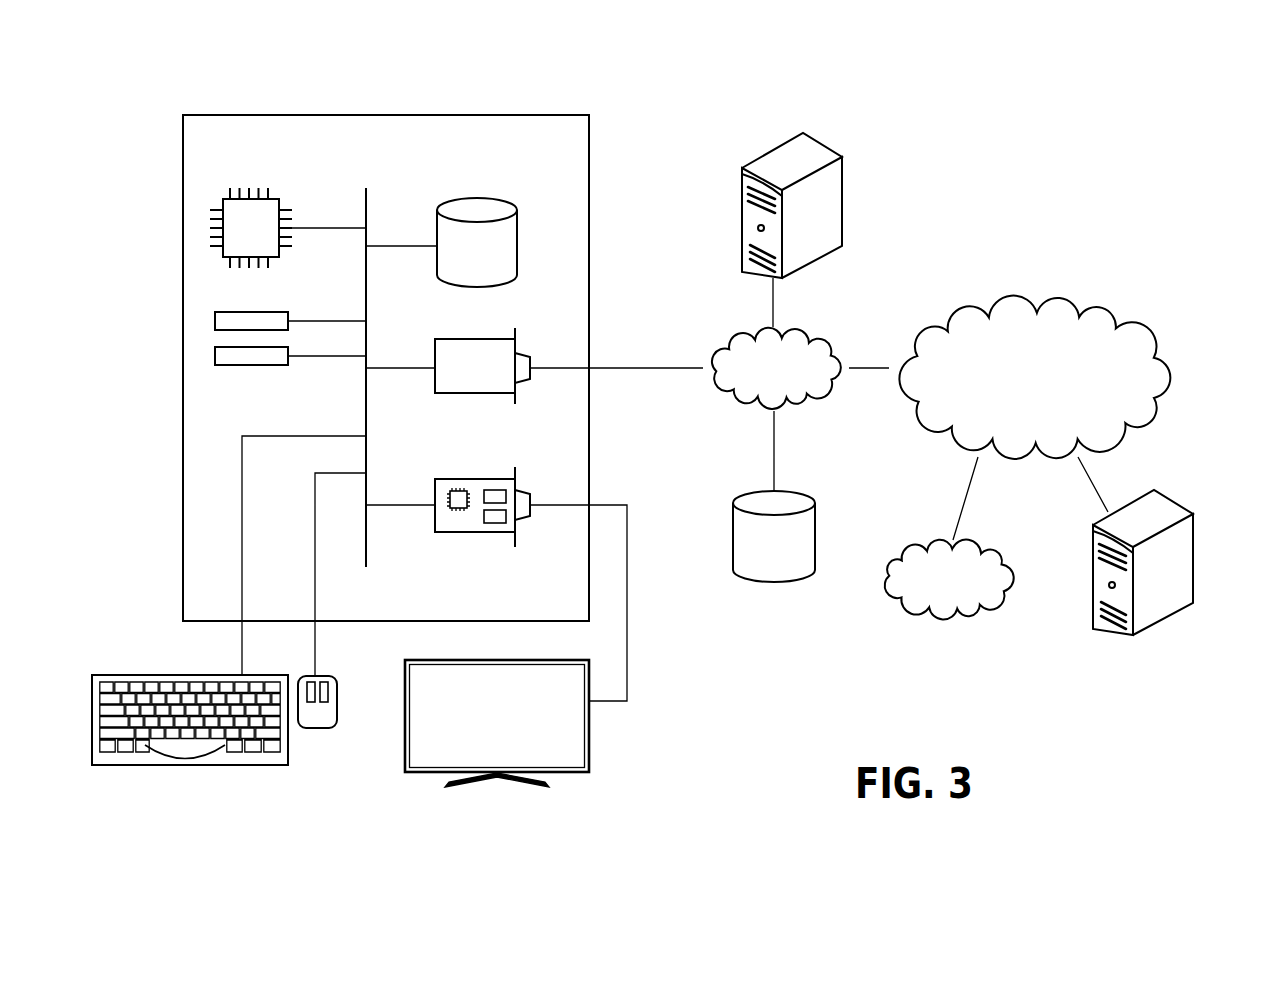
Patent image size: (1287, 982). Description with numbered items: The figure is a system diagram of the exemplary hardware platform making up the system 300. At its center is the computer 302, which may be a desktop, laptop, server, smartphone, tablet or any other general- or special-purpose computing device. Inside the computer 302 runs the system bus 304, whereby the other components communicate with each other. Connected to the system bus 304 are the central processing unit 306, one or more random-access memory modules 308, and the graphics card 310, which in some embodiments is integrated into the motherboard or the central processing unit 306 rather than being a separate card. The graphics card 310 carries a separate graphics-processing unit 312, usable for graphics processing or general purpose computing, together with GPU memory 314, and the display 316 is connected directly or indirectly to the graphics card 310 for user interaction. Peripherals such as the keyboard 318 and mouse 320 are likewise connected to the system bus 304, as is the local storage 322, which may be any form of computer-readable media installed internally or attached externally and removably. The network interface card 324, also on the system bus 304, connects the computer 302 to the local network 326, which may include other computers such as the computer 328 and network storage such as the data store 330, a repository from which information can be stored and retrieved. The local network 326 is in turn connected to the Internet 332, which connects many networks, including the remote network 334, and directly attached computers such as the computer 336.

The system 300 is at (250, 76).
The computer 302 is at (546, 114).
The system bus 304 is at (366, 200).
The central processing unit 306 is at (275, 198).
The random-access memory modules 308 is at (290, 350).
The graphics card 310 is at (435, 490).
The graphics-processing unit 312 is at (457, 510).
The GPU memory 314 is at (493, 523).
The display 316 is at (589, 752).
The keyboard 318 is at (192, 765).
The mouse 320 is at (315, 728).
The local storage 322 is at (517, 232).
The network interface card 324 is at (435, 350).
The local network 326 is at (825, 323).
The computer 328 is at (827, 143).
The data store 330 is at (805, 495).
The Internet 332 is at (1077, 290).
The remote network 334 is at (1002, 537).
The computer 336 is at (1170, 493).